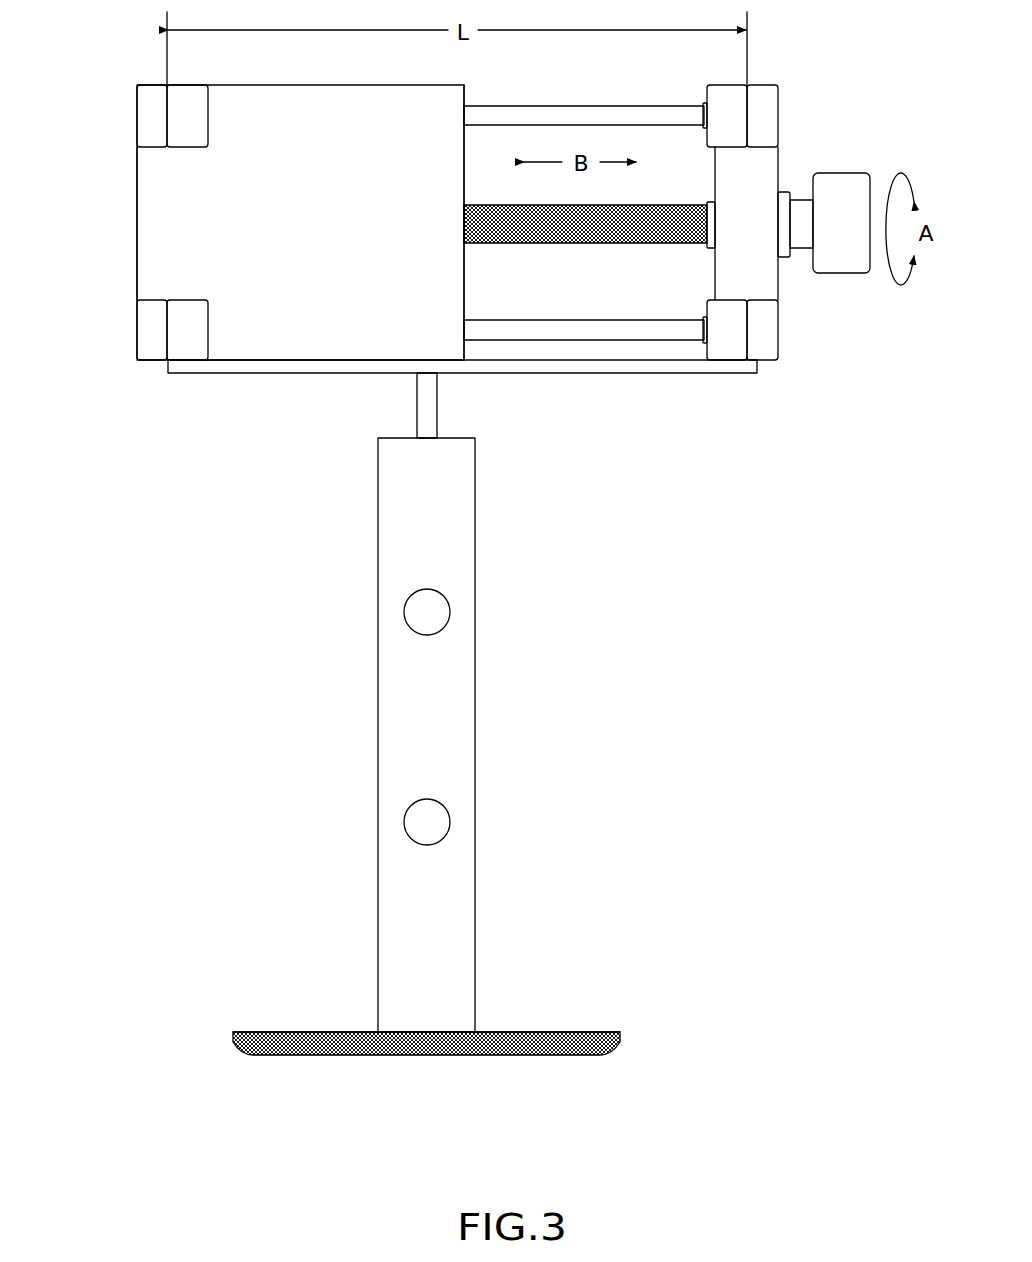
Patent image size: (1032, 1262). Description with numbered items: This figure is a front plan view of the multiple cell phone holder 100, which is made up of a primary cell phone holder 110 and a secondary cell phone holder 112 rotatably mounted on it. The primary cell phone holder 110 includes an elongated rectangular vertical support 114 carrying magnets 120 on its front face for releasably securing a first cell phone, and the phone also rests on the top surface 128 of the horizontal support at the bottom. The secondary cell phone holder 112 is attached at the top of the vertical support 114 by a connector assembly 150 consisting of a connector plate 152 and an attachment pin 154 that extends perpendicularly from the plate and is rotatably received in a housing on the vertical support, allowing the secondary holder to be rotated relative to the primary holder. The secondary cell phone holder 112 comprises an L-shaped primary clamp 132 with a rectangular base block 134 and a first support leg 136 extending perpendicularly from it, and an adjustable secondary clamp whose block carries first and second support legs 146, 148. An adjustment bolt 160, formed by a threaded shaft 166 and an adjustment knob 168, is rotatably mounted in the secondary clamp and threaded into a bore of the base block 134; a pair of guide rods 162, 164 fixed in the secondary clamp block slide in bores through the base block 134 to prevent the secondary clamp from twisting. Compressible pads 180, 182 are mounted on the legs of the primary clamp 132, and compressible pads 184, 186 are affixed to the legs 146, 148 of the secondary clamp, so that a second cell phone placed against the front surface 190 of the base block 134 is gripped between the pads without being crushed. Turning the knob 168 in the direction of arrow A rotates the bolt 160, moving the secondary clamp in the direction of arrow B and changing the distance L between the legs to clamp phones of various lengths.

The multiple cell phone holder 100 is at (163, 622).
The primary cell phone holder 110 is at (292, 795).
The secondary cell phone holder 112 is at (100, 225).
The vertical support 114 is at (475, 722).
The magnets 120 is at (430, 612).
The top surface 128 is at (285, 1032).
The primary clamp 132 is at (120, 180).
The base block 134 is at (147, 267).
The first support leg 136 is at (149, 122).
The first support leg 146 is at (765, 101).
The second support leg 148 is at (149, 335).
The connector assembly 150 is at (340, 432).
The connector plate 152 is at (352, 365).
The attachment pin 154 is at (428, 395).
The adjustment bolt 160 is at (828, 165).
The guide rod 162 is at (573, 115).
The guide rod 164 is at (595, 330).
The threaded shaft 166 is at (550, 230).
The adjustment knob 168 is at (841, 255).
The compressible pad 180 is at (195, 122).
The compressible pad 182 is at (195, 335).
The compressible pad 184 is at (728, 100).
The compressible pad 186 is at (725, 345).
The front surface 190 is at (318, 285).